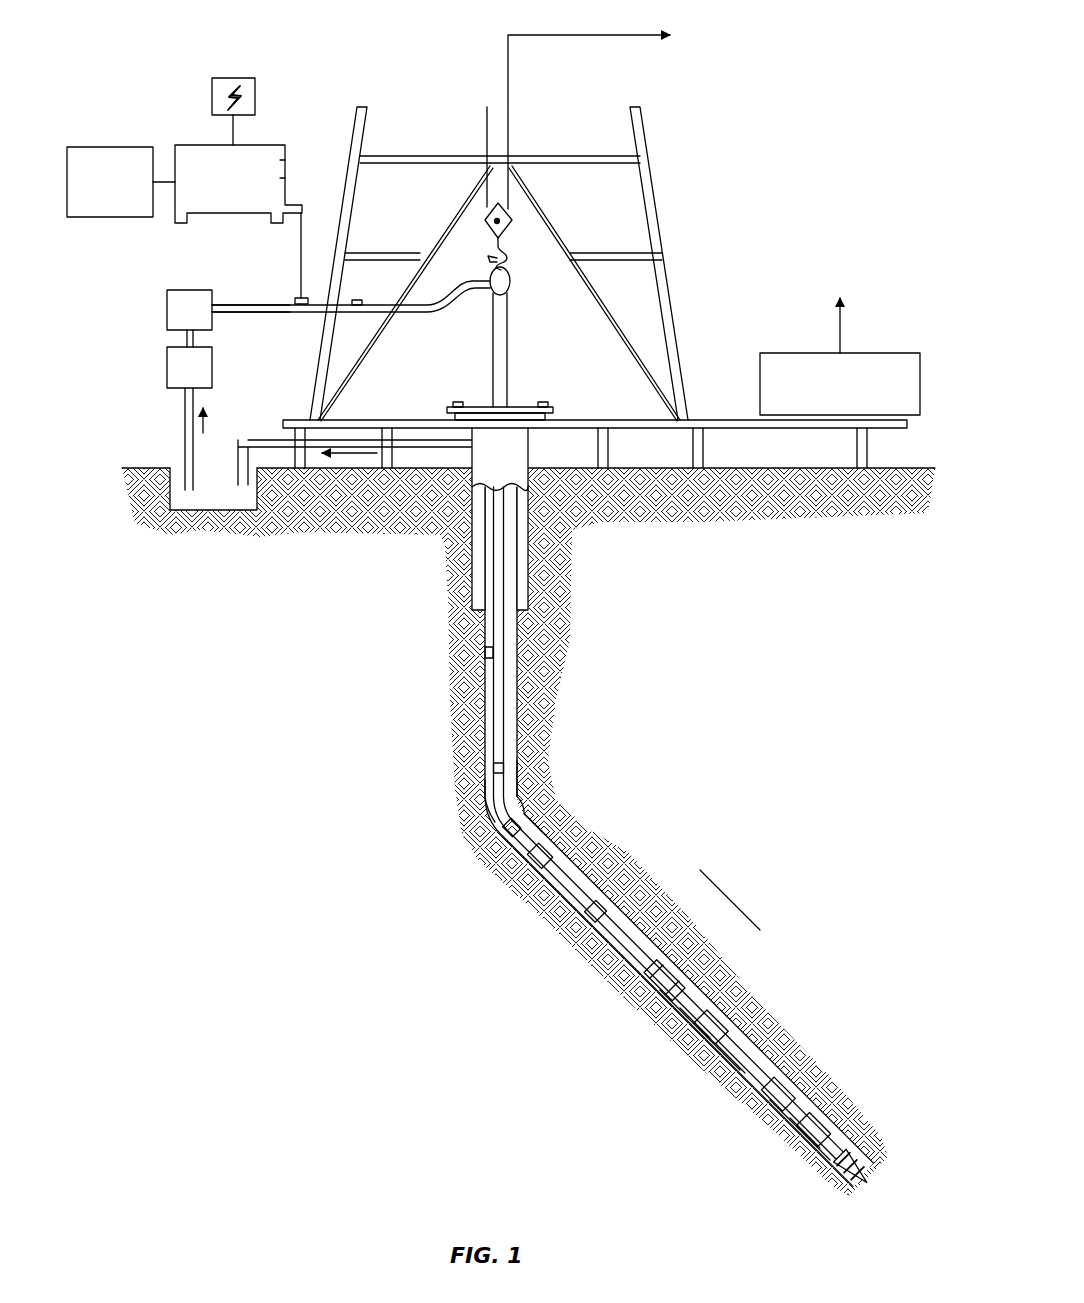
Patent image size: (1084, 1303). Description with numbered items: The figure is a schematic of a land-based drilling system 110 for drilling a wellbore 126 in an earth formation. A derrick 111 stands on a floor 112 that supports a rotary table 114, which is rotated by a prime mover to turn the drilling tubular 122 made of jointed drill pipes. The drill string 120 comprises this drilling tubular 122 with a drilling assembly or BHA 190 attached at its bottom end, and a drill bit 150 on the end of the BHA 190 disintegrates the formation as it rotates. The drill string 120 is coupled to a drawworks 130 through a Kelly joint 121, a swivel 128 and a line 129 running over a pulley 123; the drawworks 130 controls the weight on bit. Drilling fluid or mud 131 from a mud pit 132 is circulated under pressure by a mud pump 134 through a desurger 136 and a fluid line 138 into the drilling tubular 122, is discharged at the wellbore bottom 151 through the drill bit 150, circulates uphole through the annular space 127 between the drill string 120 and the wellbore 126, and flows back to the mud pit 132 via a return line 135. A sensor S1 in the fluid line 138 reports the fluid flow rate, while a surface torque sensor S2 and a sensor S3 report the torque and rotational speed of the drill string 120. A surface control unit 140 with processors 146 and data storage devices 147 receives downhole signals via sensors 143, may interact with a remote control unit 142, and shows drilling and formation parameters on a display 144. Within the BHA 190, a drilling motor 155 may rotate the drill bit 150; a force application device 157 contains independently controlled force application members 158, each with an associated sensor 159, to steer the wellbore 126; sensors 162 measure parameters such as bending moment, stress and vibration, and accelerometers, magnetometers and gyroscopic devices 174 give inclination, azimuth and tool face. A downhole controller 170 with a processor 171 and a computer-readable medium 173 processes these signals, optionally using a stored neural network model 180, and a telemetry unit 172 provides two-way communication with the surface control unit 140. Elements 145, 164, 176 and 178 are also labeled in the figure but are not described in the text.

The drilling system 110 is at (422, 42).
The derrick 111 is at (665, 257).
The floor 112 is at (690, 420).
The rotary table 114 is at (507, 405).
The drill string 120 is at (516, 703).
The Kelly joint 121 is at (508, 325).
The drilling tubular 122 is at (485, 683).
The pulley 123 is at (500, 220).
The wellbore 126 is at (528, 797).
The annular space 127 is at (540, 830).
The swivel 128 is at (478, 300).
The line 129 is at (509, 123).
The drawworks 130 is at (885, 353).
The drilling fluid 131 is at (180, 478).
The mud pit 132 is at (203, 510).
The mud pump 134 is at (167, 365).
The return line 135 is at (438, 450).
The desurger 136 is at (185, 290).
The fluid line 138 is at (290, 313).
The surface control unit 140 is at (195, 125).
The remote control unit 142 is at (226, 78).
The sensors 143 is at (300, 298).
The display 144 is at (138, 217).
The communication link 145 is at (295, 205).
The processors 146 is at (285, 160).
The data storage devices 147 is at (285, 178).
The drill bit 150 is at (862, 1132).
The wellbore bottom 151 is at (838, 1190).
The drilling motor 155 is at (712, 990).
The force application device 157 is at (832, 1090).
The force application members 158 is at (853, 1110).
The sensor 159 is at (795, 1142).
The sensors 162 is at (583, 885).
The MWD tool 164 is at (700, 1015).
The controller 170 is at (645, 950).
The processor 171 is at (625, 936).
The telemetry unit 172 is at (495, 805).
The computer-readable medium 173 is at (650, 956).
The accelerometers, magnetometers and gyroscopic devices 174 is at (735, 1030).
The stabilizer 176 is at (757, 1053).
The flow direction 178 is at (512, 834).
The neural network model 180 is at (618, 920).
The drilling assembly 190 is at (742, 886).
The sensor S1 is at (357, 300).
The surface torque sensor S2 is at (545, 401).
The sensor S3 is at (460, 401).